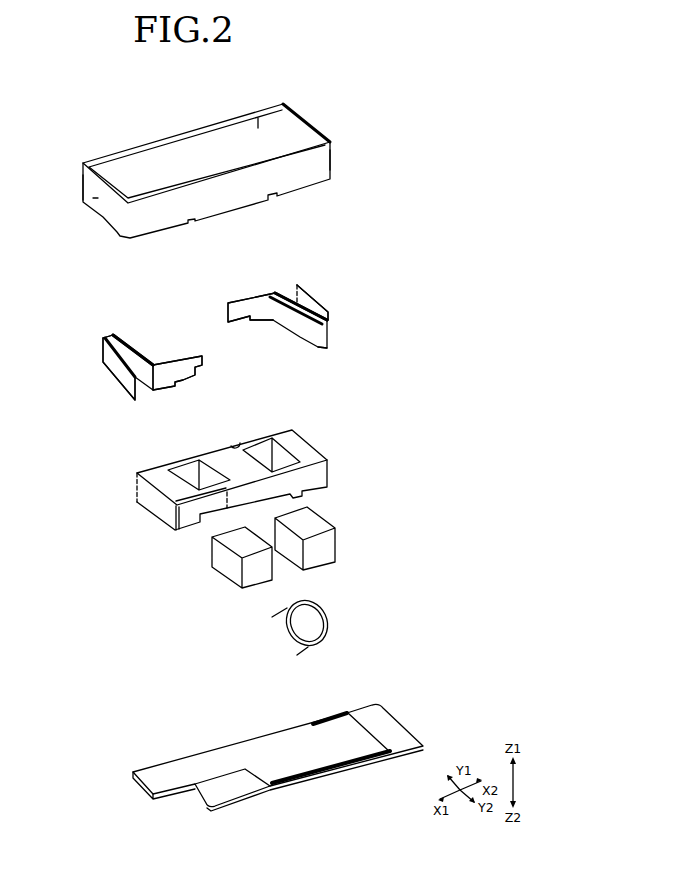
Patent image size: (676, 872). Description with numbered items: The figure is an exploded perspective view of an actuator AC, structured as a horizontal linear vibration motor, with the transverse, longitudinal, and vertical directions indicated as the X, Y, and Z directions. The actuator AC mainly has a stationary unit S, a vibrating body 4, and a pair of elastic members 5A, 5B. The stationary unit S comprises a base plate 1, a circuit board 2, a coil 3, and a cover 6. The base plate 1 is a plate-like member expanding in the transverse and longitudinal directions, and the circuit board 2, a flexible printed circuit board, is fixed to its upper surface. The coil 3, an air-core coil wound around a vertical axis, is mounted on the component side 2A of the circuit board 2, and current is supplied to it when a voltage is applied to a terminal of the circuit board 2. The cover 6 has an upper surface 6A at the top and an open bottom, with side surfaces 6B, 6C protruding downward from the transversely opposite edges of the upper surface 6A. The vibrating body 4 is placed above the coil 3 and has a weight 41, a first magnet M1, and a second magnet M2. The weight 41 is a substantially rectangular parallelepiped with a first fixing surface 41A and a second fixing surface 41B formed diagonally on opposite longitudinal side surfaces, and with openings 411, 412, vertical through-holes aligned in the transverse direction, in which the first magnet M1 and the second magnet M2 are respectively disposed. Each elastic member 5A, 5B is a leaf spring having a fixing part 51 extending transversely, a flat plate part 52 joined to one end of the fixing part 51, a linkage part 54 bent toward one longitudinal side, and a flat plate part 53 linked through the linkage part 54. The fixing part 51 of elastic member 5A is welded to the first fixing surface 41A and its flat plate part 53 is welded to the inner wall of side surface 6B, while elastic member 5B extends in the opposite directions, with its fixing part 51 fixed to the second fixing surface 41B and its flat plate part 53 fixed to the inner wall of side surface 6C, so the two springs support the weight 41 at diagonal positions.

The actuator AC is at (326, 67).
The cover 6 is at (302, 105).
The upper surface 6A is at (258, 115).
The side surface 6B is at (66, 194).
The side surface 6C is at (337, 160).
The elastic member 5A is at (160, 396).
The elastic member 5B is at (321, 353).
The fixing part 51 is at (197, 377).
The flat plate part 52 is at (137, 353).
The flat plate part 53 is at (120, 392).
The linkage part 54 is at (102, 336).
The vibrating body 4 is at (254, 479).
The weight 41 is at (239, 479).
The first fixing surface 41A is at (190, 520).
The second fixing surface 41B is at (258, 436).
The opening 411 is at (205, 466).
The opening 412 is at (236, 441).
The first magnet M1 is at (248, 590).
The second magnet M2 is at (330, 563).
The coil 3 is at (329, 614).
The base plate 1 is at (416, 738).
The circuit board 2 is at (350, 712).
The component side 2A is at (318, 722).
The stationary unit S is at (407, 660).